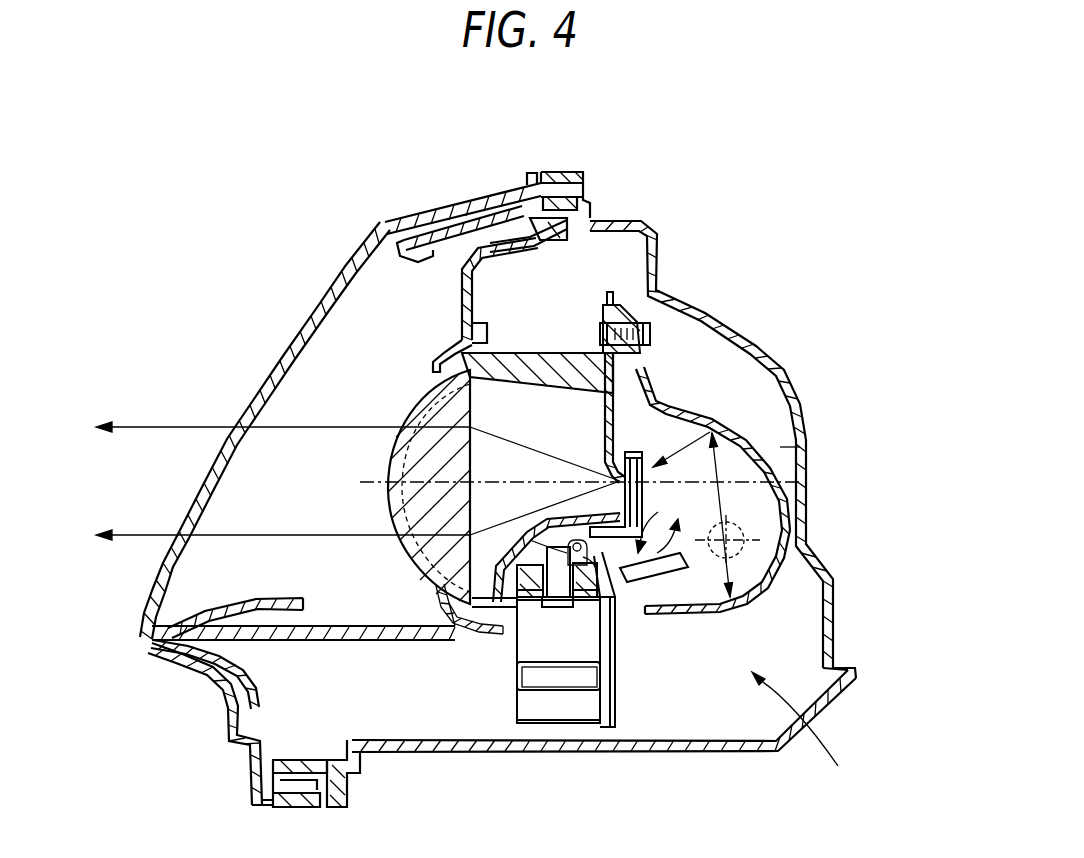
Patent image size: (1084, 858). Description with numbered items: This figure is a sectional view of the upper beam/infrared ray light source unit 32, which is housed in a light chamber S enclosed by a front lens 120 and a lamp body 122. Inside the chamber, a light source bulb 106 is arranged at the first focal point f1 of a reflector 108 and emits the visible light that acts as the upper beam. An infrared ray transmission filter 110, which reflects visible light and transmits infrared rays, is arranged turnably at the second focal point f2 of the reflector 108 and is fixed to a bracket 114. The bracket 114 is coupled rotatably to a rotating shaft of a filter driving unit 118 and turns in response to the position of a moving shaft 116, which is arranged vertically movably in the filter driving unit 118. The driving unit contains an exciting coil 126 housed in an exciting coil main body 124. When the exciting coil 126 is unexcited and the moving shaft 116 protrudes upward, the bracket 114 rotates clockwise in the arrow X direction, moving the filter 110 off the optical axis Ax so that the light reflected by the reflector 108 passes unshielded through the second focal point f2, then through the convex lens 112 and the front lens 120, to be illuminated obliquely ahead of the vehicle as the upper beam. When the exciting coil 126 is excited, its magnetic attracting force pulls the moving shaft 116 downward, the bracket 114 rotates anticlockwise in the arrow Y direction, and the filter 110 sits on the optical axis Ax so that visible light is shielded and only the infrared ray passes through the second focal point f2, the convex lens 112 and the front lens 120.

The upper beam/infrared ray light source unit 32 is at (801, 735).
The light source bulb 106 is at (760, 546).
The reflector 108 is at (770, 592).
The infrared ray transmission filter 110 is at (640, 452).
The convex lens 112 is at (410, 412).
The bracket 114 is at (600, 553).
The moving shaft 116 is at (547, 605).
The filter driving unit 118 is at (557, 727).
The front lens 120 is at (340, 273).
The lamp body 122 is at (703, 317).
The exciting coil main body 124 is at (615, 650).
The exciting coil 126 is at (582, 643).
The light chamber S is at (800, 447).
The optical axis Ax is at (735, 482).
The first focal point f1 is at (735, 552).
The second focal point f2 is at (613, 480).
The arrow X direction X is at (638, 540).
The arrow Y direction Y is at (676, 520).